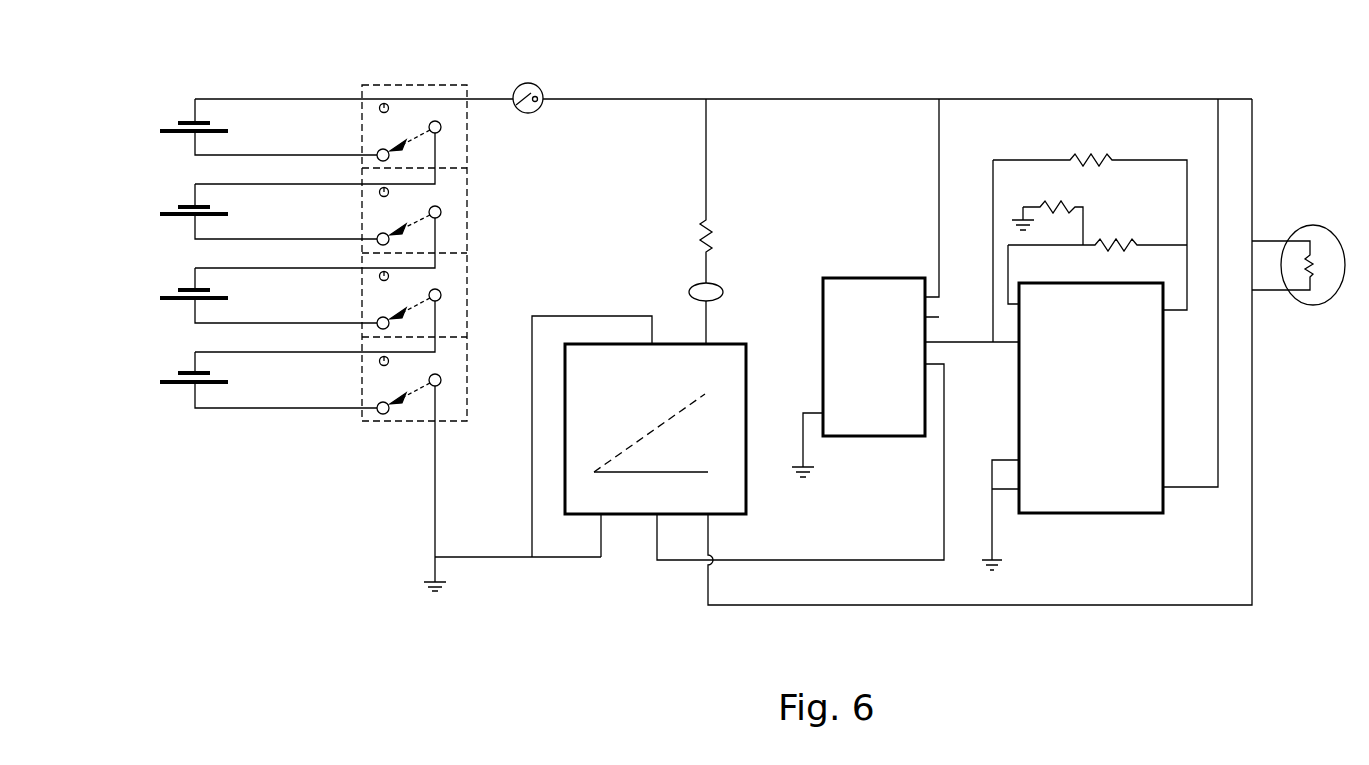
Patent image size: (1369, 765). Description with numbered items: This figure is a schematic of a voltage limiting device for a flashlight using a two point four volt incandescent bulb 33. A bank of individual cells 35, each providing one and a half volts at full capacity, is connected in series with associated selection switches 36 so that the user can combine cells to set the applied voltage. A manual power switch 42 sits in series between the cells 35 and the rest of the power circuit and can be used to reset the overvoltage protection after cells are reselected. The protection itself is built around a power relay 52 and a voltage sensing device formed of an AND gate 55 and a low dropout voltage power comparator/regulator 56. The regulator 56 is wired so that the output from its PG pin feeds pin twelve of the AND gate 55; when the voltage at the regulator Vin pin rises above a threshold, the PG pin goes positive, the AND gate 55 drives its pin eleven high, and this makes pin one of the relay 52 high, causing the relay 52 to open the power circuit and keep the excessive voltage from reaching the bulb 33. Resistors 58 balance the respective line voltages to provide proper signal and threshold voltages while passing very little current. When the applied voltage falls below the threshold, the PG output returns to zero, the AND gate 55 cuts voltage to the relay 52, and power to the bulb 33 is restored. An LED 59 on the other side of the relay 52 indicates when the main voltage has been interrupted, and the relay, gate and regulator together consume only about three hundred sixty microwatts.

The bulb 33 is at (1313, 226).
The cells 35 is at (160, 382).
The selection switches 36 is at (415, 85).
The manual power switch 42 is at (537, 85).
The power relay 52 is at (720, 344).
The AND gate 55 is at (865, 278).
The power regulator 56 is at (1078, 513).
The resistors 58 is at (710, 232).
The LED 59 is at (693, 286).